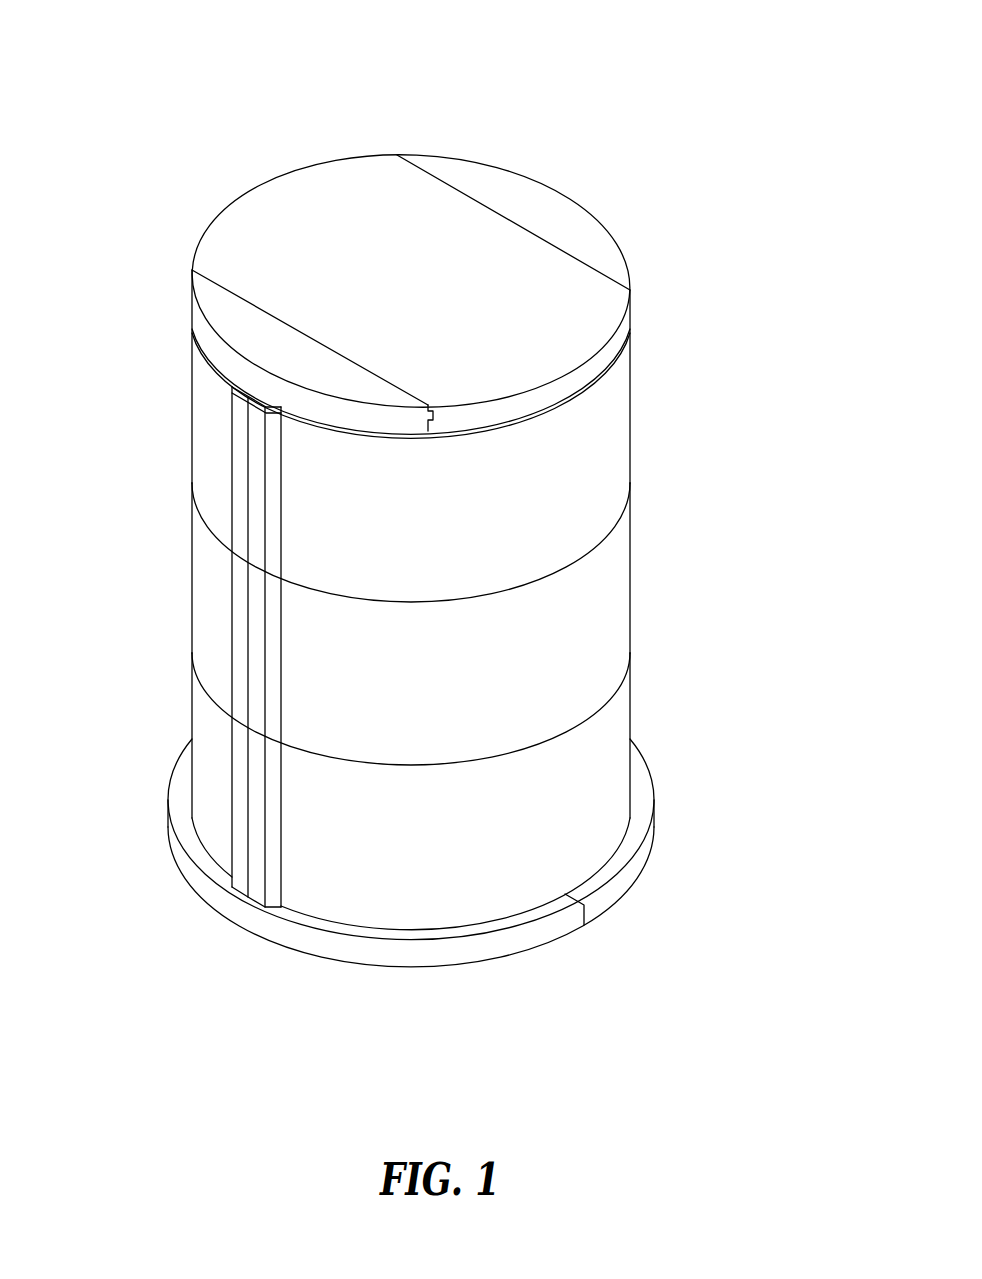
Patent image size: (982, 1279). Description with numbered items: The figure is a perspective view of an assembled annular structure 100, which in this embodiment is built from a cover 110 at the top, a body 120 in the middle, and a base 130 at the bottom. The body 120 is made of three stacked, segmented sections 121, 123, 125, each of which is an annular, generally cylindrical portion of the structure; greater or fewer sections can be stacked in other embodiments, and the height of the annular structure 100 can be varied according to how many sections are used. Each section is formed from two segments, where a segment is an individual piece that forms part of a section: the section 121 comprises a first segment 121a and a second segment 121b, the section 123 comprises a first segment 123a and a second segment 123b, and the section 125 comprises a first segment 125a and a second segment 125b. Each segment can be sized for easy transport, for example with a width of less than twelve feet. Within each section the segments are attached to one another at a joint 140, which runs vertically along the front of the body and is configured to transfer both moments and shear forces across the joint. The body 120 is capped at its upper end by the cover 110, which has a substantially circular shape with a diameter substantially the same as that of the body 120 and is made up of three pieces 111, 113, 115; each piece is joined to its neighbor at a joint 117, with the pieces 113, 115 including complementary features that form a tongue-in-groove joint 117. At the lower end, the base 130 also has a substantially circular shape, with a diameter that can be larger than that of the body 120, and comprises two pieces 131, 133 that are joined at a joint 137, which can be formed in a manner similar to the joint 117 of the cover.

The annular structure 100 is at (648, 83).
The cover 110 is at (540, 180).
The piece 111 is at (452, 173).
The piece 113 is at (325, 183).
The piece 115 is at (268, 332).
The joint 117 is at (440, 412).
The body 120 is at (101, 275).
The section 121 is at (633, 426).
The first segment 121a is at (612, 476).
The second segment 121b is at (203, 425).
The section 123 is at (633, 568).
The first segment 123a is at (612, 619).
The second segment 123b is at (203, 596).
The section 125 is at (633, 715).
The first segment 125a is at (612, 765).
The second segment 125b is at (203, 717).
The base 130 is at (614, 907).
The piece 131 is at (640, 868).
The piece 133 is at (501, 947).
The joint 137 is at (584, 912).
The joint 140 is at (258, 396).